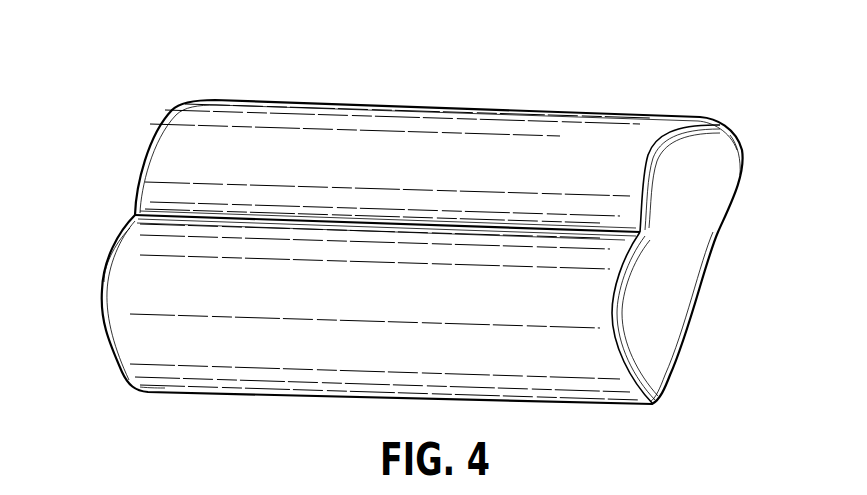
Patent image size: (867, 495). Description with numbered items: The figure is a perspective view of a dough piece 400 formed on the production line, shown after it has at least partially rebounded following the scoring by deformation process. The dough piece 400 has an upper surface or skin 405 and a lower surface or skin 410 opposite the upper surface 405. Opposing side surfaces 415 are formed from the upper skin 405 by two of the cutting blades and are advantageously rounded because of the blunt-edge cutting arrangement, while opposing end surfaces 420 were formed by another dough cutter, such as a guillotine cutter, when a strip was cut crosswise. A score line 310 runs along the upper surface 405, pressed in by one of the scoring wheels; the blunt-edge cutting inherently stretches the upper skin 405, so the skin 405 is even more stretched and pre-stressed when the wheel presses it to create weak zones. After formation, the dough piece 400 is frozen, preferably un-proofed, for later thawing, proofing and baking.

The dough piece 400 is at (123, 92).
The score line 310 is at (152, 212).
The upper surface or skin 405 is at (535, 138).
The lower surface or skin 410 is at (688, 333).
The side surfaces 415 is at (215, 362).
The end surfaces 420 is at (102, 268).